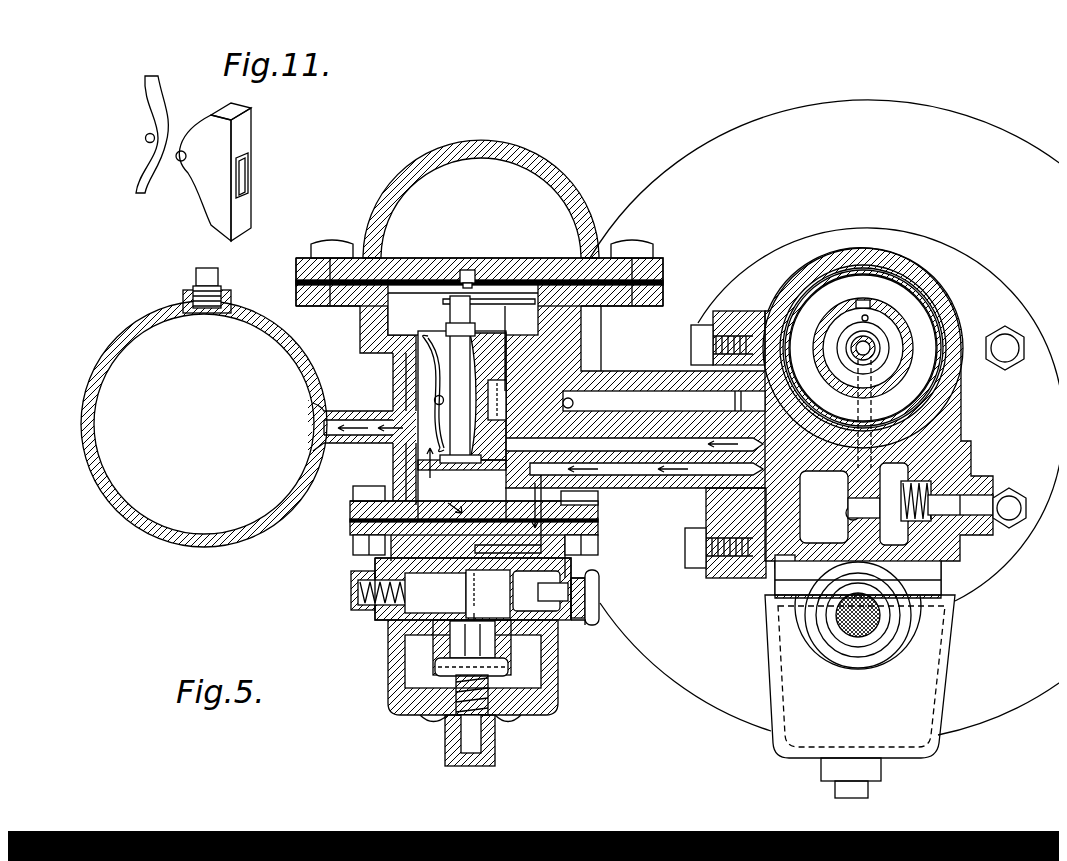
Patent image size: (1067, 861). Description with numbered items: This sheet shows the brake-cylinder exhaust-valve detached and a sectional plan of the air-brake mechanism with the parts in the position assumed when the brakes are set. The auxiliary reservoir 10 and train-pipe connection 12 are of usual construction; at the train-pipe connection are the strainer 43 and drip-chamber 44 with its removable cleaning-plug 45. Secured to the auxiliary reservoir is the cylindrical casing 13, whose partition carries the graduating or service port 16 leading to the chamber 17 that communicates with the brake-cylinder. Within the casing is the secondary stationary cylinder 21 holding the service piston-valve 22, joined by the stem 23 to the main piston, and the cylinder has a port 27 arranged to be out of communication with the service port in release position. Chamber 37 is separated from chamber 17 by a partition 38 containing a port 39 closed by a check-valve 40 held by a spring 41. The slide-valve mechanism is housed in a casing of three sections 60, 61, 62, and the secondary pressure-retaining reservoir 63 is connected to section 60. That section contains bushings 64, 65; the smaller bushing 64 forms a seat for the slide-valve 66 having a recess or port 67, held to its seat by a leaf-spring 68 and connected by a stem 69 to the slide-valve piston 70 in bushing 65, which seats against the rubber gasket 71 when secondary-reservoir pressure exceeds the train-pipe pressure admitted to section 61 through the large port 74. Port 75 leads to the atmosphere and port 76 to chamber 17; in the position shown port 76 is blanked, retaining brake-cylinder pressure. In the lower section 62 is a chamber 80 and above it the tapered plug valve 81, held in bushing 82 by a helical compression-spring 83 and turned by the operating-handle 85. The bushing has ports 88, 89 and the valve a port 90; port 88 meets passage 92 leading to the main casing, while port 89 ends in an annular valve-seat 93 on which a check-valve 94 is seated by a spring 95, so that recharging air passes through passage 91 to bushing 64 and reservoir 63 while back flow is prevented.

In FIG. 5, the auxiliary reservoir 10 is at (824, 421).
In FIG. 5, the train-pipe connection 12 is at (820, 651).
In FIG. 5, the cylindrical casing 13 is at (808, 263).
In FIG. 5, the graduating or service port 16 is at (863, 401).
In FIG. 5, the chamber 17 is at (953, 428).
In FIG. 5, the secondary stationary cylinder 21 is at (836, 307).
In FIG. 5, the service piston-valve 22 is at (884, 357).
In FIG. 5, the stem 23 is at (860, 337).
In FIG. 5, the port 27 is at (868, 300).
In FIG. 5, the chamber 37 is at (824, 507).
In FIG. 5, the partition 38 is at (842, 520).
In FIG. 5, the port 39 is at (839, 505).
In FIG. 5, the check-valve 40 is at (862, 479).
In FIG. 5, the spring 41 is at (945, 484).
In FIG. 5, the strainer 43 is at (872, 609).
In FIG. 5, the drip-chamber 44 is at (920, 573).
In FIG. 5, the cleaning-plug 45 is at (862, 783).
In FIG. 5, the casing section 60 is at (645, 364).
In FIG. 5, the casing section 61 is at (530, 152).
In FIG. 5, the casing section 62 is at (380, 678).
In FIG. 5, the secondary pressure-retaining reservoir 63 is at (242, 407).
In FIG. 5, the bushing 64 is at (395, 358).
In FIG. 5, the bushing 65 is at (352, 315).
In FIG. 11, the slide-valve 66 is at (240, 122).
In FIG. 5, the slide-valve 66 is at (490, 354).
In FIG. 11, the recess or port 67 is at (236, 165).
In FIG. 5, the recess or port 67 is at (462, 408).
In FIG. 11, the leaf-spring 68 is at (137, 97).
In FIG. 5, the leaf-spring 68 is at (436, 393).
In FIG. 5, the stem 69 is at (412, 378).
In FIG. 5, the slide-valve piston 70 is at (504, 288).
In FIG. 5, the rubber gasket 71 is at (430, 270).
In FIG. 5, the port 74 is at (780, 564).
In FIG. 5, the exhaust-port 75 is at (548, 400).
In FIG. 5, the port 76 is at (634, 444).
In FIG. 5, the chamber 80 is at (385, 645).
In FIG. 5, the valve 81 is at (540, 579).
In FIG. 5, the bushing 82 is at (555, 630).
In FIG. 5, the helical compression-spring 83 is at (345, 597).
In FIG. 5, the operating-handle 85 is at (592, 597).
In FIG. 5, the port 88 is at (488, 594).
In FIG. 5, the port 89 is at (485, 614).
In FIG. 5, the port 90 is at (458, 585).
In FIG. 5, the passage 91 is at (462, 425).
In FIG. 5, the passage 92 is at (470, 541).
In FIG. 5, the annular valve-seat 93 is at (490, 648).
In FIG. 5, the check-valve 94 is at (440, 653).
In FIG. 5, the spring 95 is at (440, 728).